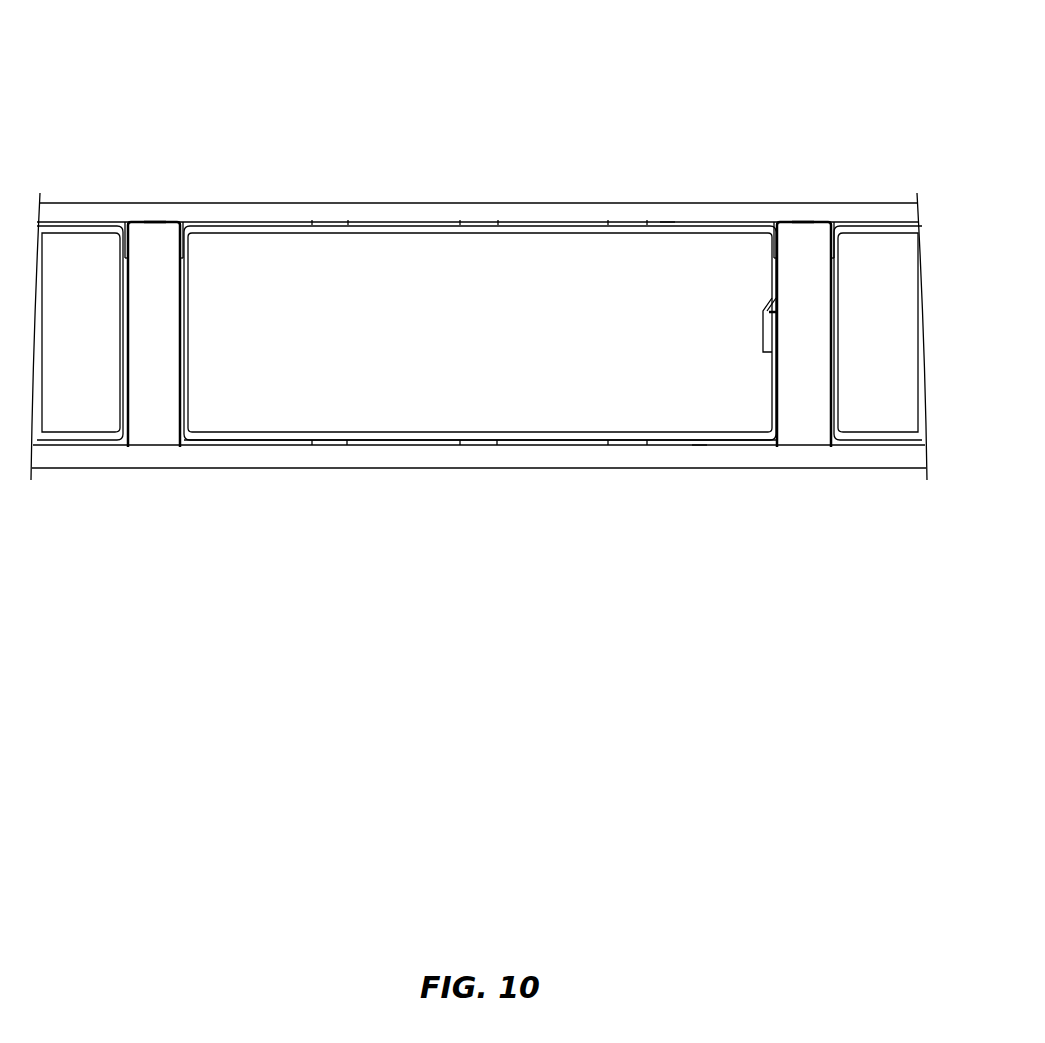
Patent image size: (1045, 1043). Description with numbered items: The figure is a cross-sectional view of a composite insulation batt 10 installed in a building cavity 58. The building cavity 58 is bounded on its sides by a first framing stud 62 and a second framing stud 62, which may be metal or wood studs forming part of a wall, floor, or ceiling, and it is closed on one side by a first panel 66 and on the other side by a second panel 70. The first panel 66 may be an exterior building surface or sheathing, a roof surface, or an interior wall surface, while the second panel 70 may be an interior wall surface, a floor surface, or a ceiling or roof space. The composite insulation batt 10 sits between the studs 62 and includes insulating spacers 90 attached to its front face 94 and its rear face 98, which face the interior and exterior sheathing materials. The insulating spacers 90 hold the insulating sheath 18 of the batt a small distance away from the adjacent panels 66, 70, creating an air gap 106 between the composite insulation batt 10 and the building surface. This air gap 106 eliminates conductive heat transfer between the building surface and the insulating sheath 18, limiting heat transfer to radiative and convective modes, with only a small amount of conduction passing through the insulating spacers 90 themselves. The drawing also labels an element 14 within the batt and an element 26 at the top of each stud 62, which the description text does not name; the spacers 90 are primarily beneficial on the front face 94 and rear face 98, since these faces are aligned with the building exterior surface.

The composite insulation batt 10 is at (405, 240).
The cell housing face 14 is at (560, 290).
The insulating sheath 18 is at (742, 227).
The divider cap 26 is at (165, 221).
The building cavity 58 is at (418, 483).
The framing stud 62 is at (158, 390).
The first panel 66 is at (558, 457).
The second panel 70 is at (272, 213).
The insulating spacer 90 is at (328, 218).
The front face 94 is at (225, 222).
The rear face 98 is at (248, 437).
The air gap 106 is at (670, 213).